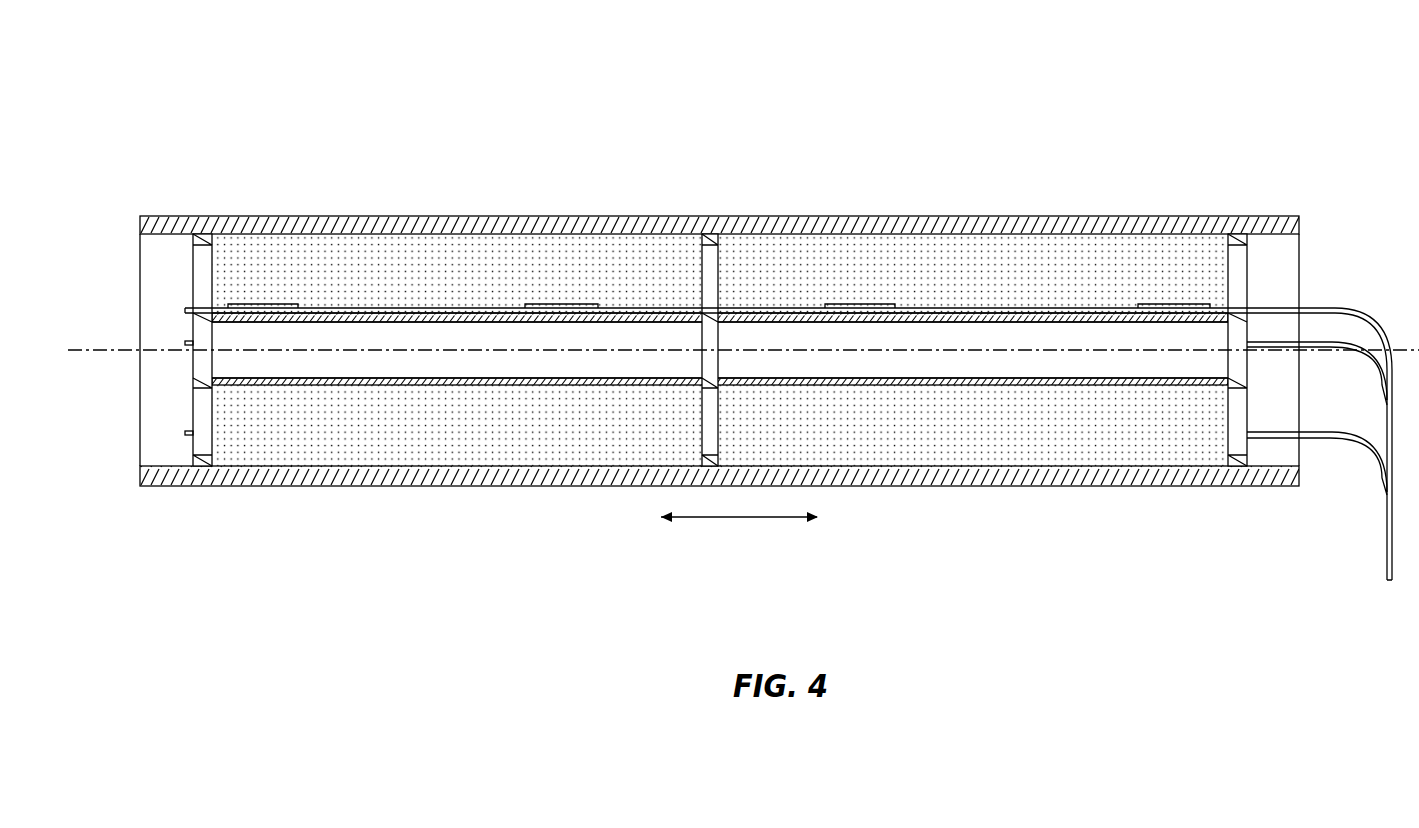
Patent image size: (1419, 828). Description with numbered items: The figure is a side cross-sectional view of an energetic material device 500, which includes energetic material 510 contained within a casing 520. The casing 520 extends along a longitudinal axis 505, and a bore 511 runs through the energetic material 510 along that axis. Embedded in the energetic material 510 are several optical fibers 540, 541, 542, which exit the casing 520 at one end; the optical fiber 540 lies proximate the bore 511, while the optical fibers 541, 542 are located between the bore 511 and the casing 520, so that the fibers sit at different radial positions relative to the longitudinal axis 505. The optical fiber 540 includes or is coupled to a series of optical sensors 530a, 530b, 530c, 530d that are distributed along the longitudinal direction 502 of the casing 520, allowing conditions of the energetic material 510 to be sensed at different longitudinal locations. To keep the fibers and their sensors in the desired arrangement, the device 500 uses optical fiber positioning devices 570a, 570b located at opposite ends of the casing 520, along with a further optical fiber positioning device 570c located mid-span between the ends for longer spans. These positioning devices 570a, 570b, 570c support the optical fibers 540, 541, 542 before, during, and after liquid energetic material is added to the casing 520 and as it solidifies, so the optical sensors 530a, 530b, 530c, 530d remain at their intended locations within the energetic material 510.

The energetic material device 500 is at (608, 88).
The longitudinal direction 502 is at (742, 518).
The longitudinal axis 505 is at (93, 355).
The energetic material 510 is at (664, 268).
The bore 511 is at (228, 338).
The casing 520 is at (940, 216).
The optical sensor 530a is at (1172, 306).
The optical sensor 530b is at (860, 306).
The optical sensor 530c is at (560, 306).
The optical sensor 530d is at (270, 306).
The optical fiber 540 is at (1284, 306).
The optical fiber 541 is at (1286, 346).
The optical fiber 542 is at (1286, 437).
The optical fiber positioning device 570a is at (1262, 269).
The optical fiber positioning device 570b is at (182, 274).
The optical fiber positioning device 570c is at (732, 420).